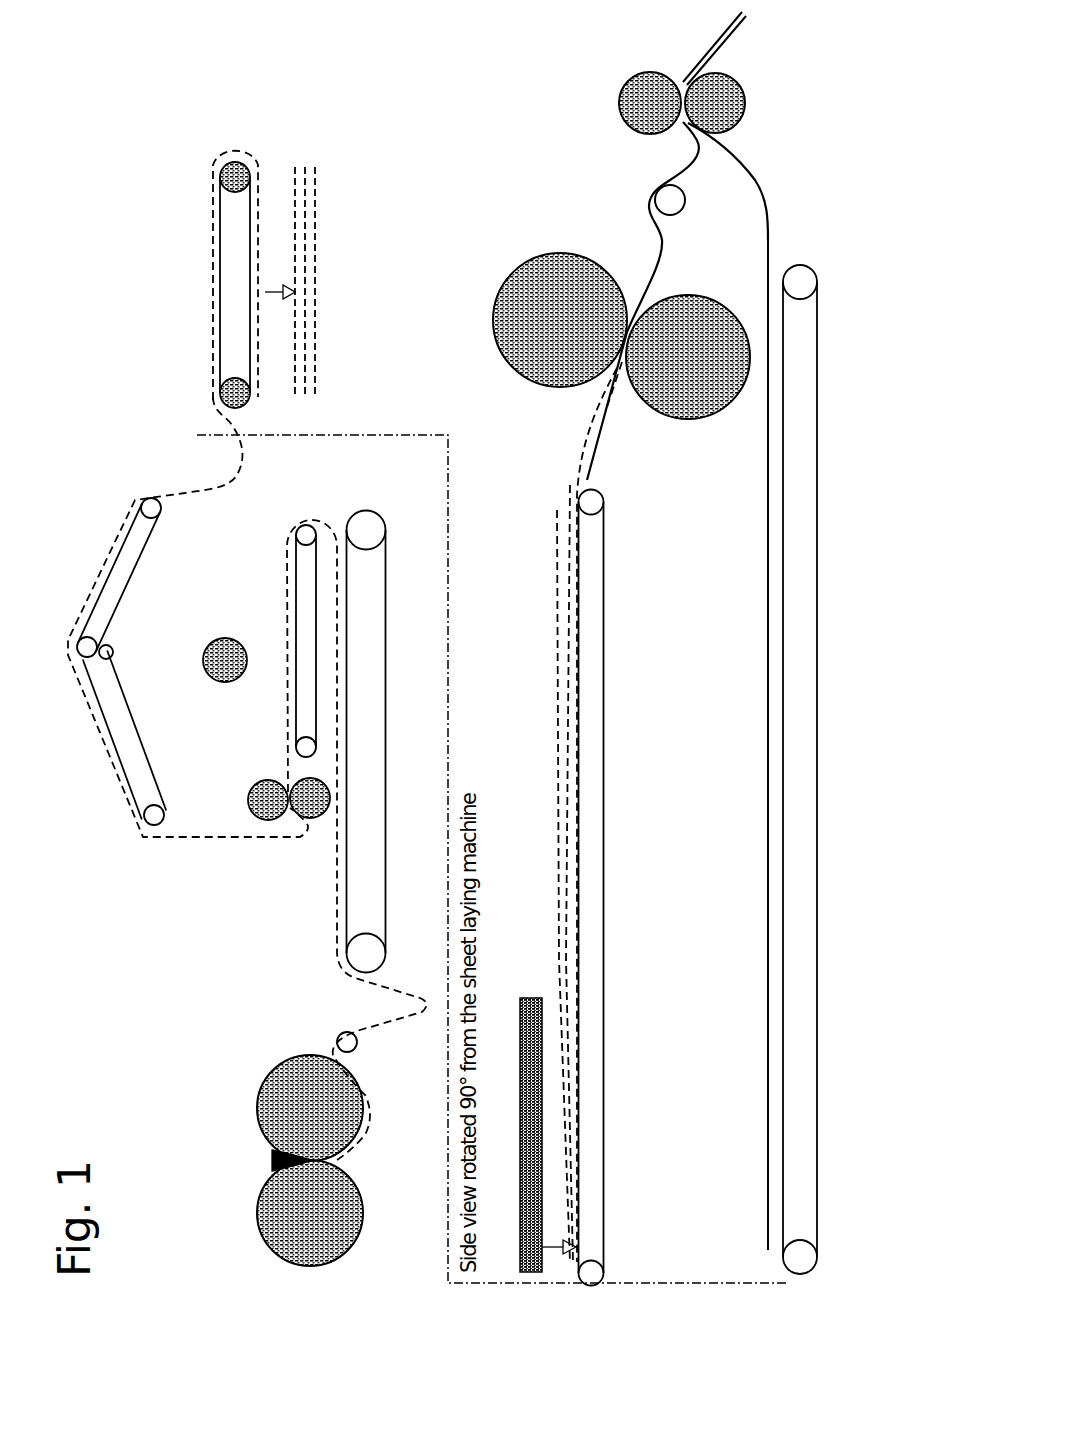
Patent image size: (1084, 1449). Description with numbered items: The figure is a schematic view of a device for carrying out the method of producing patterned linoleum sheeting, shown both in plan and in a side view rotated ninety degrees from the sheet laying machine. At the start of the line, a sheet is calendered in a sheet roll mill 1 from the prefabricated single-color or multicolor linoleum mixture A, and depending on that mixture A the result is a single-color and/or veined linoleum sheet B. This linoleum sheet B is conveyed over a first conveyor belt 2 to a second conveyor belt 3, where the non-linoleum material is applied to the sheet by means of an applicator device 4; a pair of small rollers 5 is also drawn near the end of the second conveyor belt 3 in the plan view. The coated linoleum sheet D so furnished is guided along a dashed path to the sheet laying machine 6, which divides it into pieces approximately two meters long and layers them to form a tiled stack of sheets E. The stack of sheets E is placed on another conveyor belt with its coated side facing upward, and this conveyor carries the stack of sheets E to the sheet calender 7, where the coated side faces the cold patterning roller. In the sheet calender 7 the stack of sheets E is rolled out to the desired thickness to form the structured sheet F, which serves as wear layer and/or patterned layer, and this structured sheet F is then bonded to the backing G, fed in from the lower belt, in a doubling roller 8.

The sheet roll mill 1 is at (300, 1160).
The first conveyor belt 2 is at (582, 775).
The second conveyor belt 3 is at (306, 641).
The applicator device 4 is at (219, 655).
The pair of feed rollers 5 is at (278, 799).
The sheet laying machine 6 is at (360, 711).
The sheet calender 7 is at (618, 336).
The doubling roller 8 is at (667, 73).
The linoleum mixture A is at (280, 1160).
The linoleum sheet B is at (323, 920).
The linoleum sheet furnished with non-linoleum material D is at (247, 778).
The tiled stack of sheets E is at (458, 714).
The structured sheet F is at (677, 301).
The backing G is at (750, 742).